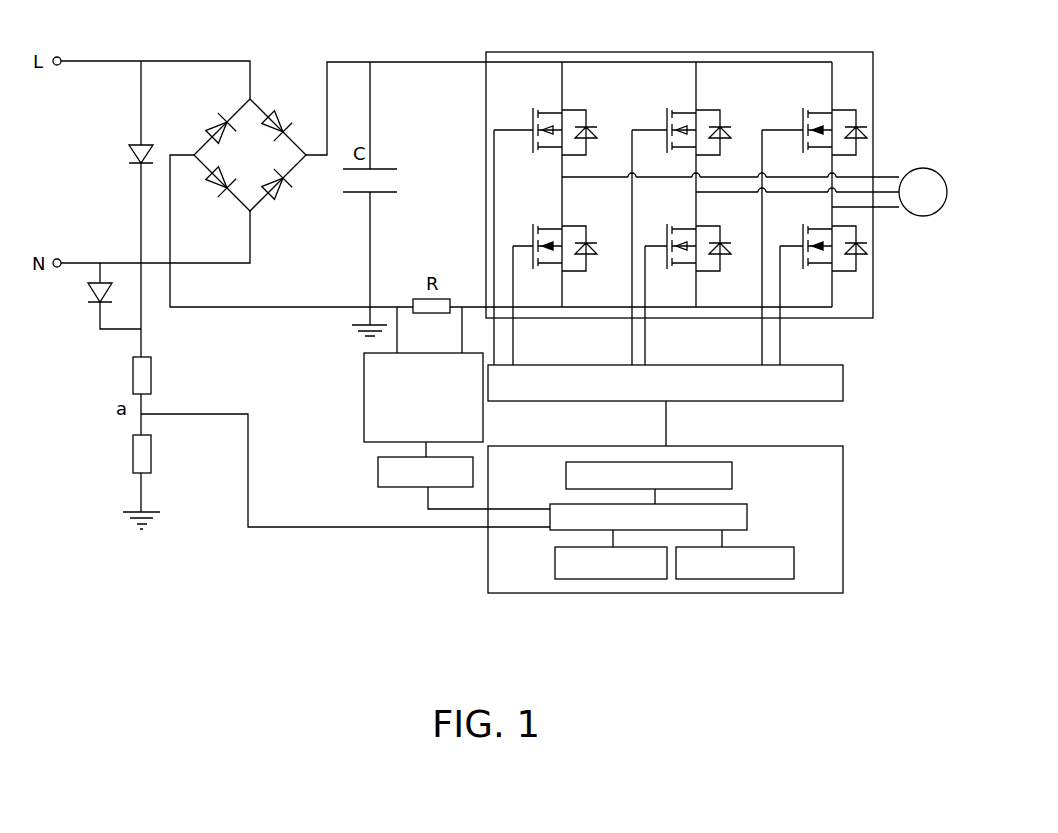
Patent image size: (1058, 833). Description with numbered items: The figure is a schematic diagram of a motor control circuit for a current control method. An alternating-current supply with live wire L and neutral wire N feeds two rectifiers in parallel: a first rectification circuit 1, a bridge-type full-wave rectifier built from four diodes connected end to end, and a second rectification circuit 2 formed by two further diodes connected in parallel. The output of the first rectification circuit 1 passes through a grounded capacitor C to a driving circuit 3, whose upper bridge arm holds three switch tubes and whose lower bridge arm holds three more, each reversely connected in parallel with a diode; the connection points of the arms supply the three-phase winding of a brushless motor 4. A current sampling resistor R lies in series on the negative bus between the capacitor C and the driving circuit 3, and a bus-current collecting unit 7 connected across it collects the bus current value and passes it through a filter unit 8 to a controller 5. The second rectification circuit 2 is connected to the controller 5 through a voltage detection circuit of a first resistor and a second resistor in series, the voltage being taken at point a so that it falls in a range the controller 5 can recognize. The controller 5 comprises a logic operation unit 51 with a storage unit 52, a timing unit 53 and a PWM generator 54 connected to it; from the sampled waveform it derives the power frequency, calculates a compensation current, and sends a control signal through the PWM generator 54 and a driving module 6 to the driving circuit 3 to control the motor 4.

The first rectification circuit 1 is at (235, 112).
The second rectification circuit 2 is at (130, 143).
The driving circuit 3 is at (632, 52).
The motor 4 is at (921, 168).
The controller 5 is at (698, 519).
The driving module 6 is at (843, 392).
The bus-current collecting unit 7 is at (364, 410).
The filter unit 8 is at (378, 466).
The logic operation unit 51 is at (747, 515).
The storage unit 52 is at (555, 570).
The timing unit 53 is at (794, 567).
The PWM generator 54 is at (734, 483).